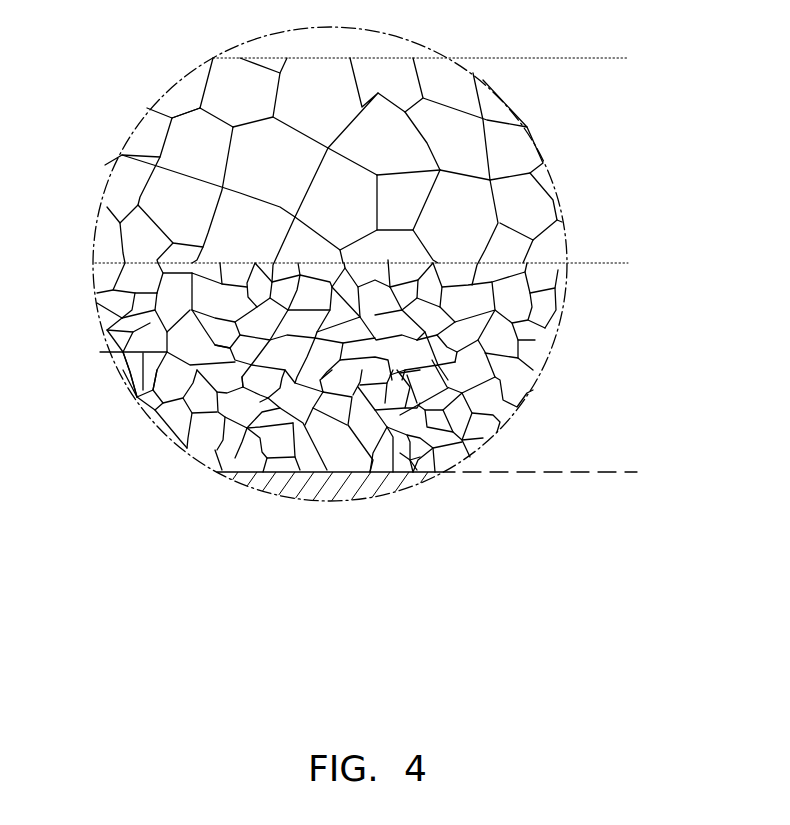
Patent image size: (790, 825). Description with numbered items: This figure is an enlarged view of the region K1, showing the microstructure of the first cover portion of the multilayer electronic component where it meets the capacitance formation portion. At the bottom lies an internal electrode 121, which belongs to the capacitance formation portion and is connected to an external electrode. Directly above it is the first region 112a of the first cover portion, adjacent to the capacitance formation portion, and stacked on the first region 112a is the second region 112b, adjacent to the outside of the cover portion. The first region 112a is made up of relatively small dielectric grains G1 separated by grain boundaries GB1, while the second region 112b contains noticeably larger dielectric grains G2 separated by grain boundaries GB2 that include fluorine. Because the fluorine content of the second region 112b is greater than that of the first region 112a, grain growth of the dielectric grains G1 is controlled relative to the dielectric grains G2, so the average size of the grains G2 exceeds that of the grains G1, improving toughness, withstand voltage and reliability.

The region K1 is at (346, 617).
The second region of the first cover portion 112b is at (628, 58).
The first region of the first cover portion 112a is at (628, 264).
The dielectric grains G2 is at (147, 155).
The grain boundaries GB2 is at (187, 112).
The dielectric grains G1 is at (118, 321).
The grain boundaries GB1 is at (137, 397).
The internal electrode 121 is at (331, 487).